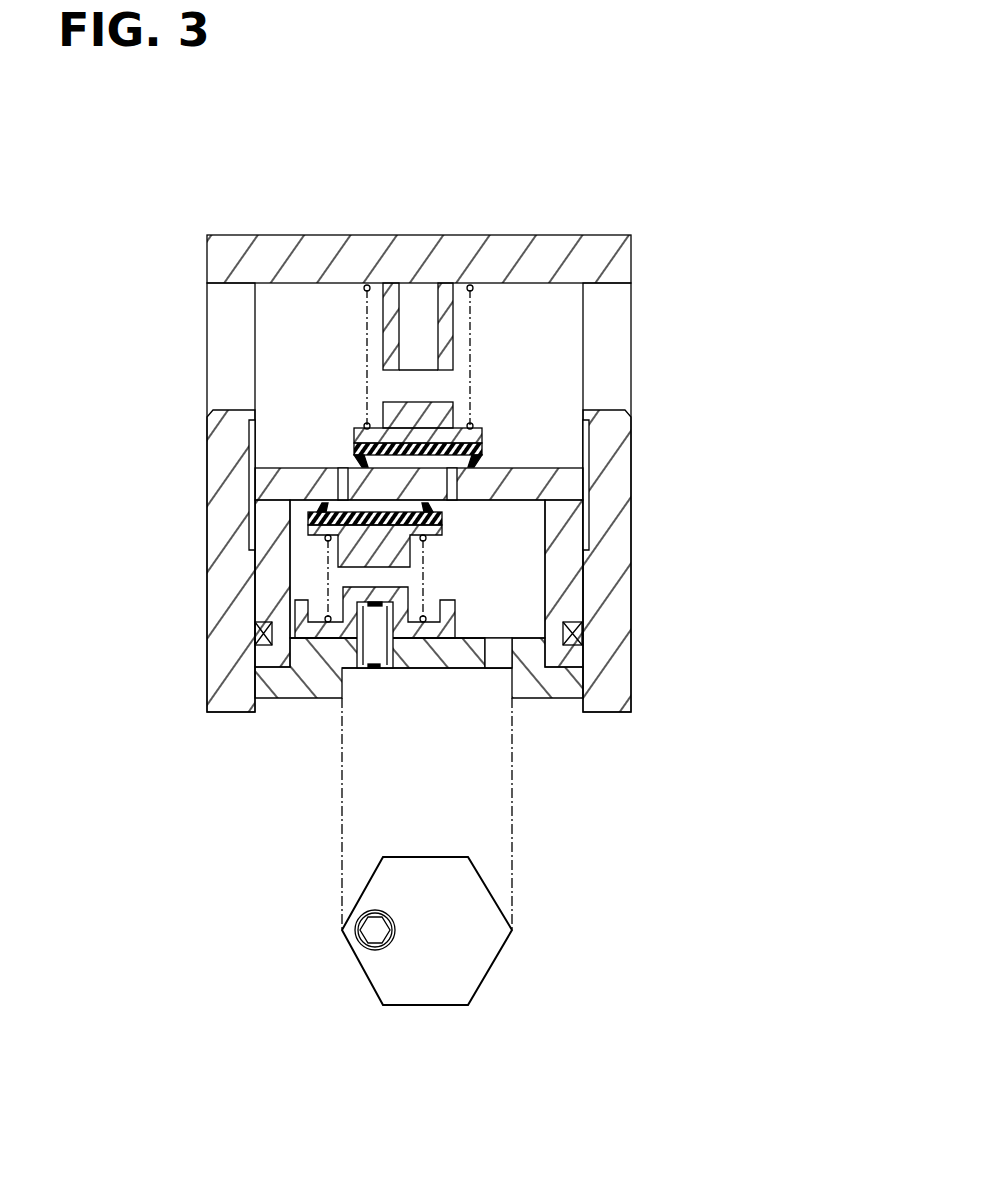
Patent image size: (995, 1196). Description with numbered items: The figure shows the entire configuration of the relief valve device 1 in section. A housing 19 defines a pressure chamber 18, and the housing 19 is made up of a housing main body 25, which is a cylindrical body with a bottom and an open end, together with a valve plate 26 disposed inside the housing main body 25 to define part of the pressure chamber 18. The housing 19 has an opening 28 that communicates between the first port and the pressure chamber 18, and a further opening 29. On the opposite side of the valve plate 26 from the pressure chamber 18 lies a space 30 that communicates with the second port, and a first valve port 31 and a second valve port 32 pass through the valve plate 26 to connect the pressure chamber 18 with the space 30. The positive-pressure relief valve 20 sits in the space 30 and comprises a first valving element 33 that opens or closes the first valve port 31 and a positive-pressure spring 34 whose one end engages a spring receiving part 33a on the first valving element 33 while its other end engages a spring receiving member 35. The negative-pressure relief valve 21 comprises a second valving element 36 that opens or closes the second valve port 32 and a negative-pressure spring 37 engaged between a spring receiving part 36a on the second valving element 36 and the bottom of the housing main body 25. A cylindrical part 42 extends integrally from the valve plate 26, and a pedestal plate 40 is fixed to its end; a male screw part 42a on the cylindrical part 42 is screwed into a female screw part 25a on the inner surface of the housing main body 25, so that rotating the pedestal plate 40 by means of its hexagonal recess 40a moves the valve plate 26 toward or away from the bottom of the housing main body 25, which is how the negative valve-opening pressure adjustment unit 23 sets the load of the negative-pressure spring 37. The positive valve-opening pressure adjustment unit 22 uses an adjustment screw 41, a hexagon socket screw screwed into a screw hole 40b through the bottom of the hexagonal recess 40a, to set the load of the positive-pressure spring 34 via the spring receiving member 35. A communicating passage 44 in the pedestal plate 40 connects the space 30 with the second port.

The relief valve device 1 is at (162, 180).
The pressure chamber 18 is at (528, 323).
The housing 19 is at (637, 250).
The positive-pressure relief valve 20 is at (522, 637).
The negative-pressure relief valve 21 is at (353, 387).
The positive valve-opening pressure adjustment unit 22 is at (375, 673).
The negative valve-opening pressure adjustment unit 23 is at (563, 673).
The housing main body 25 is at (373, 250).
The female screw part 25a is at (590, 500).
The valve plate 26 is at (533, 480).
The opening 28 is at (618, 338).
The opening 29 is at (230, 330).
The space 30 is at (520, 605).
The first valve port 31 is at (342, 485).
The second valve port 32 is at (353, 452).
The first valving element 33 is at (372, 545).
The spring receiving part 33a is at (315, 538).
The positive-pressure spring 34 is at (370, 592).
The spring receiving member 35 is at (500, 658).
The second valving element 36 is at (433, 422).
The spring receiving part 36a is at (480, 440).
The negative-pressure spring 37 is at (473, 380).
The pedestal plate 40 is at (292, 685).
The hexagonal recess 40a is at (350, 705).
The screw hole 40b is at (385, 677).
The adjustment screw 41 is at (273, 633).
The cylindrical part 42 is at (562, 580).
The male screw part 42a is at (585, 532).
The communicating passage 44 is at (512, 718).